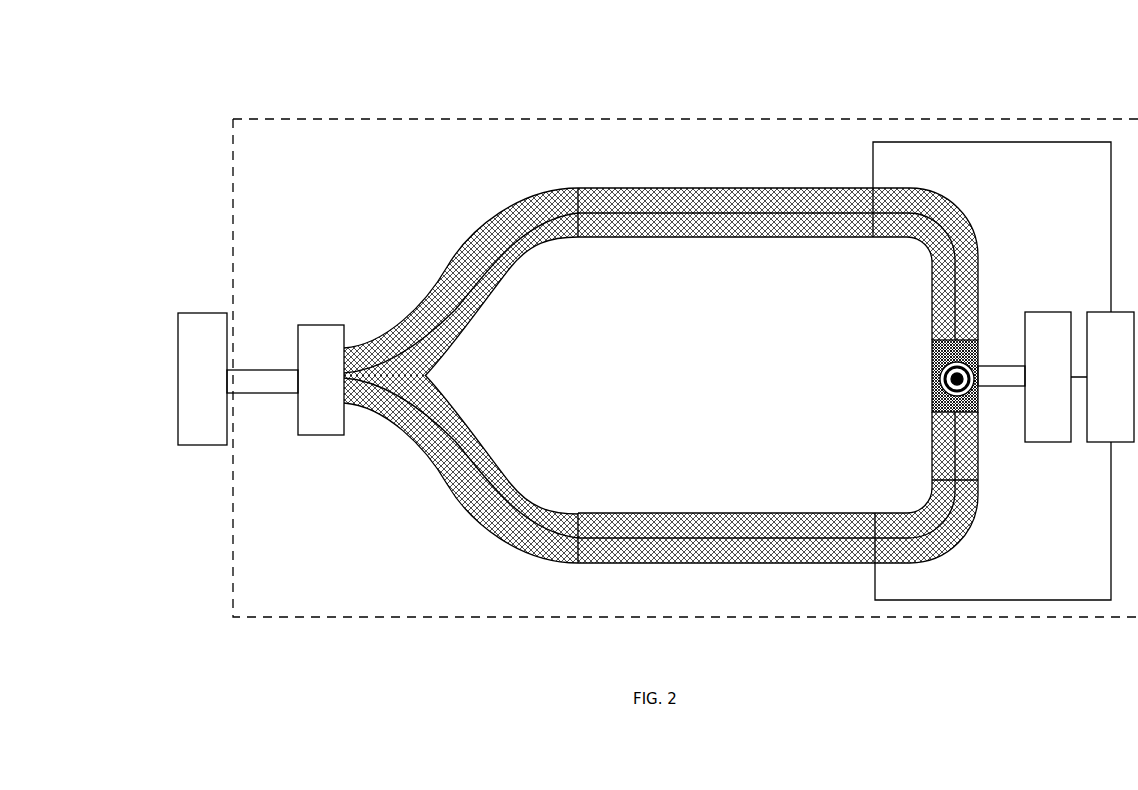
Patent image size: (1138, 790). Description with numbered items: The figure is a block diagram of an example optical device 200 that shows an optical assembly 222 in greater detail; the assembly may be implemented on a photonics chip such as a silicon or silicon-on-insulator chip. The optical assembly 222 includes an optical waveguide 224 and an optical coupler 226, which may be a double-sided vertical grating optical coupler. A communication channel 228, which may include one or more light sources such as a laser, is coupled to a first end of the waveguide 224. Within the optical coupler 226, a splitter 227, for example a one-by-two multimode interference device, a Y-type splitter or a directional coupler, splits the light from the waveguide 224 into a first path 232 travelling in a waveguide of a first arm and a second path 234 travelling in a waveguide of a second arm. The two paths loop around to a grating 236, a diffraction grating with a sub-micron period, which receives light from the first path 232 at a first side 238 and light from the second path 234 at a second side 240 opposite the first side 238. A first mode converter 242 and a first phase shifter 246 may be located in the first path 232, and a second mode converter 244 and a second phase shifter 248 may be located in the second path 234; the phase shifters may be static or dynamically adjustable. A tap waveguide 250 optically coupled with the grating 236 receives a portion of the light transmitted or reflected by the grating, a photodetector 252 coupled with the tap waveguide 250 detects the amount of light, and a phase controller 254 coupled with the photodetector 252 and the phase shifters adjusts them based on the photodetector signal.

The optical device 200 is at (782, 82).
The optical assembly 222 is at (598, 119).
The optical waveguide 224 is at (262, 381).
The optical coupler 226 is at (359, 290).
The splitter 227 is at (321, 380).
The communication channel 228 is at (202, 379).
The first path 232 is at (488, 330).
The second path 234 is at (487, 407).
The grating 236 is at (932, 372).
The first side 238 is at (932, 333).
The second side 240 is at (937, 412).
The first mode converter 242 is at (690, 237).
The second mode converter 244 is at (640, 513).
The first phase shifter 246 is at (880, 237).
The second phase shifter 248 is at (876, 513).
The tap waveguide 250 is at (1001, 376).
The photodetector 252 is at (1048, 377).
The phase controller 254 is at (1003, 371).